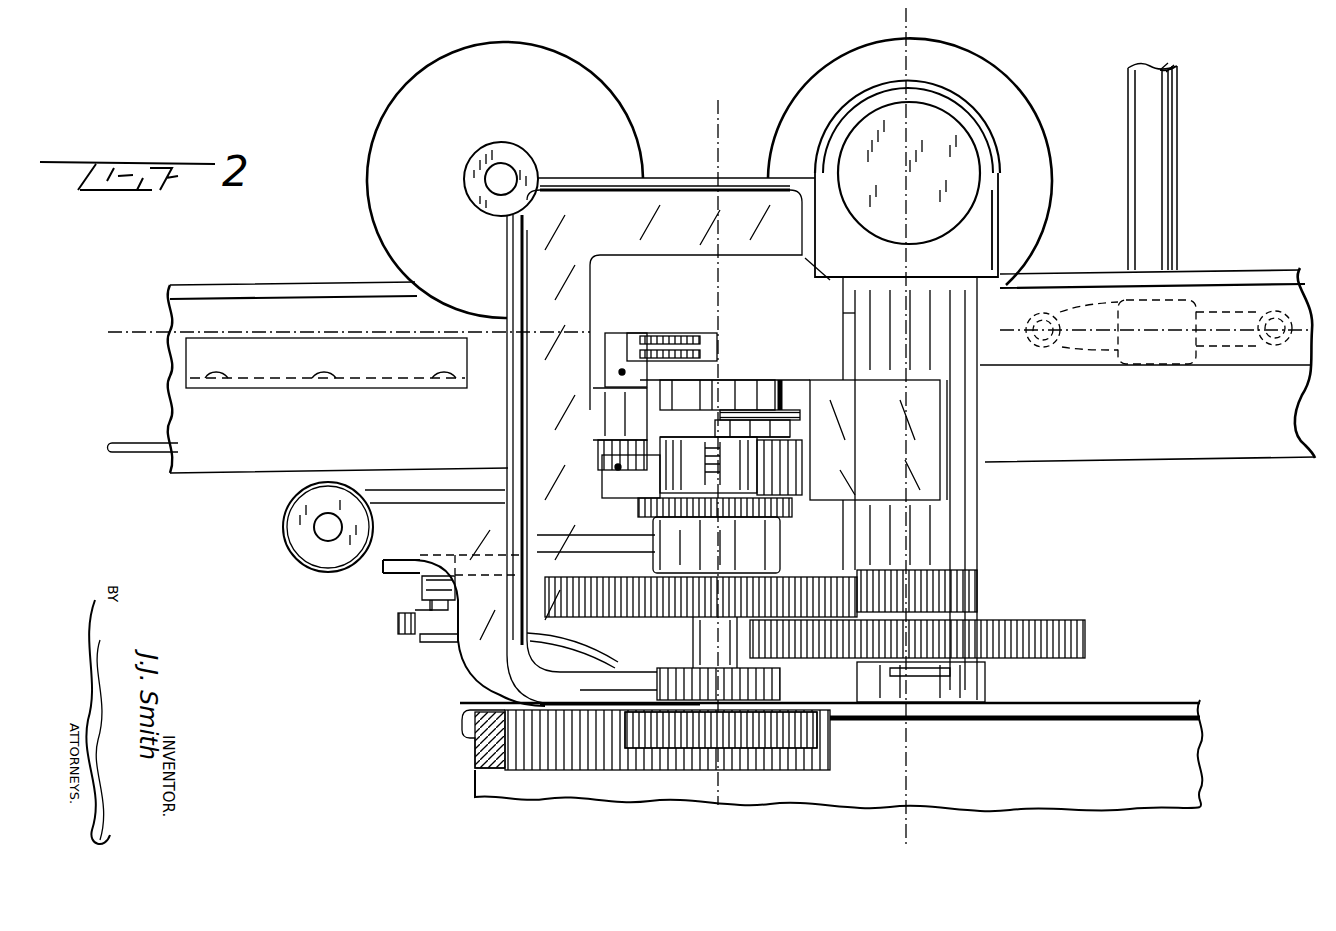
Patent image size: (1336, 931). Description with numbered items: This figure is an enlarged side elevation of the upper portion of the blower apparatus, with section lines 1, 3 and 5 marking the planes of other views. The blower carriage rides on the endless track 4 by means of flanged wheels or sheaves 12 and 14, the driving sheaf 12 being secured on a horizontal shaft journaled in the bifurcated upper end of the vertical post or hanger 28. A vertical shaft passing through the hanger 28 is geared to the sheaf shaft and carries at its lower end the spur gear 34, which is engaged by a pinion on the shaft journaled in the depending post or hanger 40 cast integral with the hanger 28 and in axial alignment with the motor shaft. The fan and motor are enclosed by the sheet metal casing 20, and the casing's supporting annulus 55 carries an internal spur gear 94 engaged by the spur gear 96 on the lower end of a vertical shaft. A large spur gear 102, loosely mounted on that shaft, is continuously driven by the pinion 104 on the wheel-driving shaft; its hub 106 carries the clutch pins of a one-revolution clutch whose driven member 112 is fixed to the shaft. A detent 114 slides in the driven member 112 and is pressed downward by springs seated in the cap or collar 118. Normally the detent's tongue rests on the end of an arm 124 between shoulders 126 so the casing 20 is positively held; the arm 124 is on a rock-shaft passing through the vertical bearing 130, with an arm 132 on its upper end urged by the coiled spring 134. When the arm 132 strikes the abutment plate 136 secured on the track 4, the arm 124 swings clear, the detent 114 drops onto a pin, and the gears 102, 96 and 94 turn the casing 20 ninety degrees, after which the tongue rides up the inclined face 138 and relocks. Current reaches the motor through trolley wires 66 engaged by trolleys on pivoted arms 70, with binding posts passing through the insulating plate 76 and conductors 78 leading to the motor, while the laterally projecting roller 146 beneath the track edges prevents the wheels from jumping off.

The section line 1- 1 is at (904, 16).
The section line 3- 3 is at (720, 103).
The endless track 4 is at (330, 284).
The section line 5- 5 is at (117, 327).
The driving sheaf 12 is at (990, 76).
The flanged wheel or sheave 14 is at (408, 78).
The sheet metal casing 20 is at (1138, 740).
The post or hanger 28 is at (955, 425).
The spur gear 34 is at (1050, 628).
The depending post or hanger 40 is at (972, 690).
The supporting annulus 55 is at (486, 712).
The trolley wires 66 is at (155, 452).
The arms 70 is at (608, 535).
The plate of insulating material 76 is at (392, 570).
The conductors 78 is at (397, 625).
The internal spur gear 94 is at (570, 750).
The spur gear 96 is at (745, 690).
The large spur gear 102 is at (625, 605).
The pinion 104 is at (945, 592).
The hub 106 is at (752, 562).
The driven member 112 is at (745, 523).
The detent 114 is at (712, 478).
The cap or collar 118 is at (765, 447).
The arm 124 is at (632, 494).
The shoulder 126 is at (735, 490).
The vertical bearing 130 is at (615, 400).
The arm 132 is at (708, 343).
The coiled spring 134 is at (603, 350).
The abutment plate 136 is at (293, 362).
The inclined face 138 is at (780, 515).
The roller 146 is at (283, 544).